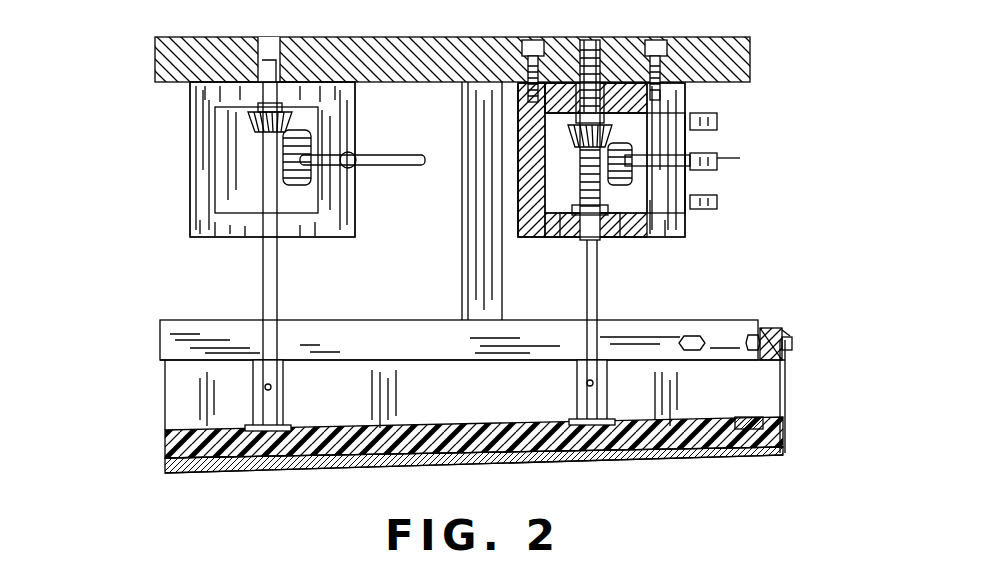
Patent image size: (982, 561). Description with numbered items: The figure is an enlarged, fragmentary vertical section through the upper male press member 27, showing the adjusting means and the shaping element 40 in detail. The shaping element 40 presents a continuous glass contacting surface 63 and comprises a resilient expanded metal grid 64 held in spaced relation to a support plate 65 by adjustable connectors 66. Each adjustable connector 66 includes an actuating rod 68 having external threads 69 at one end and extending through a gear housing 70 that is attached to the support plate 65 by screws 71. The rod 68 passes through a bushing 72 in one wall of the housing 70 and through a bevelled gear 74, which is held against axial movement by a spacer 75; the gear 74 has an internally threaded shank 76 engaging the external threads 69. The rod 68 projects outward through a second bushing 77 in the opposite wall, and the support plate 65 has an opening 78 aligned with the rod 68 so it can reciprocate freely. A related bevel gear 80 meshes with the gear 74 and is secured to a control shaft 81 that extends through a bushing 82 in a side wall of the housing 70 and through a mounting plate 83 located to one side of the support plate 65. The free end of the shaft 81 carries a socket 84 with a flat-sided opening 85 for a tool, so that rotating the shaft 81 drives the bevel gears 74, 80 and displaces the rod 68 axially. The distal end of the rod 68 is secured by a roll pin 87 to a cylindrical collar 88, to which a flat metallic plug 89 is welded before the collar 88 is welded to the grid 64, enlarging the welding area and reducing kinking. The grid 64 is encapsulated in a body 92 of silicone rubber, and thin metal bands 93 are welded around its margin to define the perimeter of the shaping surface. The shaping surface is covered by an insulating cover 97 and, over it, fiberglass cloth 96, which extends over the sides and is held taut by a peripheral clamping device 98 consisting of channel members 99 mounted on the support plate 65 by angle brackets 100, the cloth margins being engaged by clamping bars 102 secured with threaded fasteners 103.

The upper male press member 27 is at (148, 490).
The male shaping element 40 is at (752, 475).
The glass contacting surface 63 is at (303, 474).
The expanded metal grid 64 is at (415, 430).
The support plate 65 is at (752, 52).
The adjustable connector 66 is at (178, 208).
The actuating rod 68 is at (262, 280).
The external threads 69 is at (580, 120).
The gear housing 70 is at (188, 236).
The screws 71 is at (524, 40).
The bushing 72 is at (577, 232).
The bevelled gear 74 is at (245, 128).
The spacer 75 is at (560, 218).
The shank 76 is at (545, 117).
The bushing 77 is at (580, 45).
The opening 78 is at (588, 40).
The bevel gear 80 is at (300, 185).
The control shaft 81 is at (390, 155).
The bushing 82 is at (690, 200).
The mounting plate 83 is at (688, 232).
The socket 84 is at (705, 120).
The flat-sided opening 85 is at (705, 160).
The roll pin 87 is at (265, 388).
The cylindrical collar 88 is at (280, 372).
The flat metallic plug 89 is at (283, 426).
The body of silicone rubber 92 is at (690, 450).
The metal bands 93 is at (753, 418).
The fiberglass cloth 96 is at (565, 465).
The insulating cover 97 is at (250, 472).
The peripheral clamping device 98 is at (793, 318).
The channel members 99 is at (740, 320).
The angle brackets 100 is at (470, 252).
The clamping bars 102 is at (793, 335).
The threaded fasteners 103 is at (800, 343).